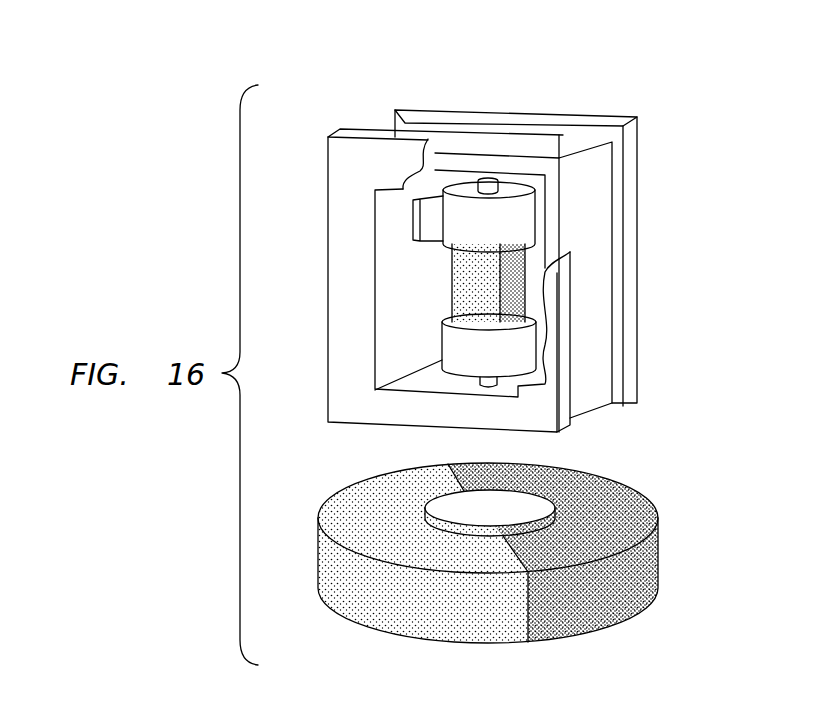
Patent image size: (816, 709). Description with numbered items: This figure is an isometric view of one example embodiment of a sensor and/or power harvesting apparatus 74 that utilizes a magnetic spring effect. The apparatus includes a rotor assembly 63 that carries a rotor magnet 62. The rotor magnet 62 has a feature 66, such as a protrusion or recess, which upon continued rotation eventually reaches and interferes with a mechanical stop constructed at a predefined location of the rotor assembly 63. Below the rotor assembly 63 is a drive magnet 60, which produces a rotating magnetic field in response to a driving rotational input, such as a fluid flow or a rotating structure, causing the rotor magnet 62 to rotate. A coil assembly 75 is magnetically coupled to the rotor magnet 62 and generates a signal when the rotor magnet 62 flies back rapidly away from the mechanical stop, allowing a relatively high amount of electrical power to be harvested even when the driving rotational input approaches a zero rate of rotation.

The sensor and/or power harvesting apparatus 74 is at (575, 84).
The coil assembly 75 is at (587, 217).
The feature 66 is at (413, 228).
The rotor assembly 63 is at (410, 276).
The rotor magnet 62 is at (452, 282).
The drive magnet 60 is at (600, 473).